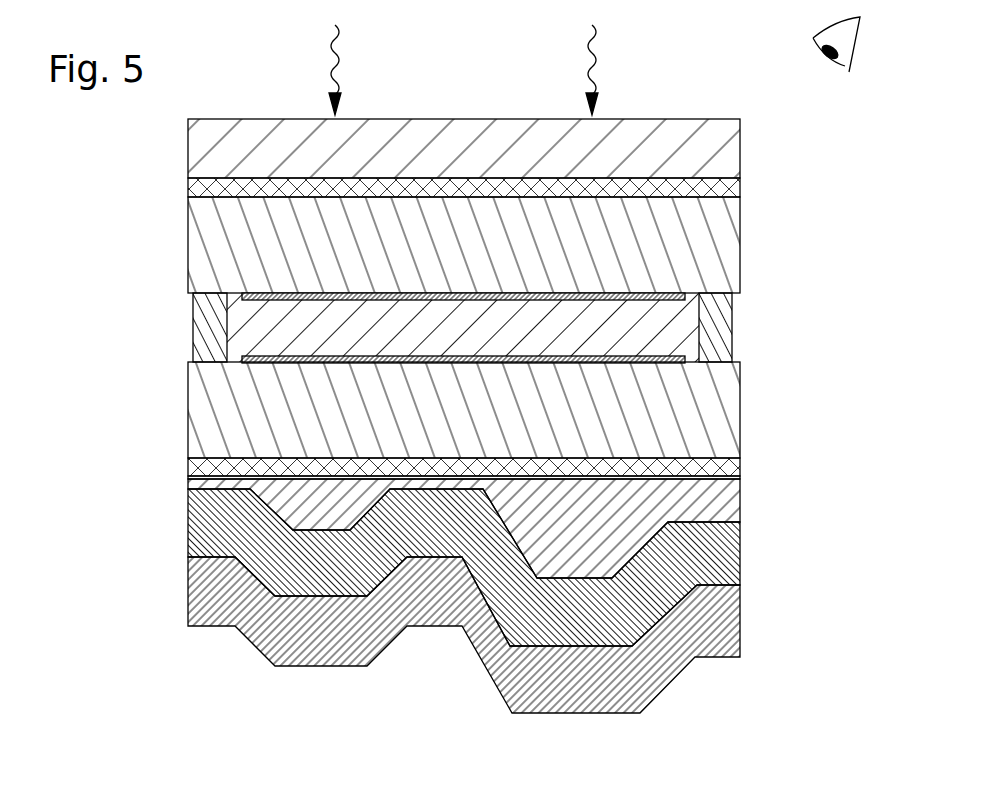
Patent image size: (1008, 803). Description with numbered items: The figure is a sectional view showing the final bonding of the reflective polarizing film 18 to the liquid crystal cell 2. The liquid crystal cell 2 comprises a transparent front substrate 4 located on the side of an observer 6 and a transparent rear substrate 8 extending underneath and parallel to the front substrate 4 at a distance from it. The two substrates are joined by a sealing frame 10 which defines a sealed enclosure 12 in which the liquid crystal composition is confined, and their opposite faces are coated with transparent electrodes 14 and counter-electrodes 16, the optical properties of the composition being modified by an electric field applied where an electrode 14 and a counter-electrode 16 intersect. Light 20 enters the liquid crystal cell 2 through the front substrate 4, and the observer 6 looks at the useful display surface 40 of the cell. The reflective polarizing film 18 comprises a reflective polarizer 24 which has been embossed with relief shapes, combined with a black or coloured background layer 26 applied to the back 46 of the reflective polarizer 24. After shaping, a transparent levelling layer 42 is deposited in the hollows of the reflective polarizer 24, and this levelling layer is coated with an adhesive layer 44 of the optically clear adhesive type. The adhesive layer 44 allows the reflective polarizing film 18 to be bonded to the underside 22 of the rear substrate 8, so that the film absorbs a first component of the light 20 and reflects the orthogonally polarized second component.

The liquid crystal cell 2 is at (427, 251).
The front substrate 4 is at (720, 245).
The observer 6 is at (849, 55).
The rear substrate 8 is at (722, 412).
The sealing frame 10 is at (710, 332).
The sealed enclosure 12 is at (471, 328).
The electrodes 14 is at (262, 297).
The counter-electrodes 16 is at (265, 360).
The reflective polarizing film 18 is at (425, 586).
The light 20 is at (333, 52).
The underside 22 is at (300, 459).
The reflective polarizer 24 is at (712, 557).
The black or coloured background layer 26 is at (712, 628).
The useful display surface 40 is at (740, 110).
The transparent levelling layer 42 is at (712, 500).
The adhesive layer 44 is at (725, 468).
The back 46 is at (307, 596).